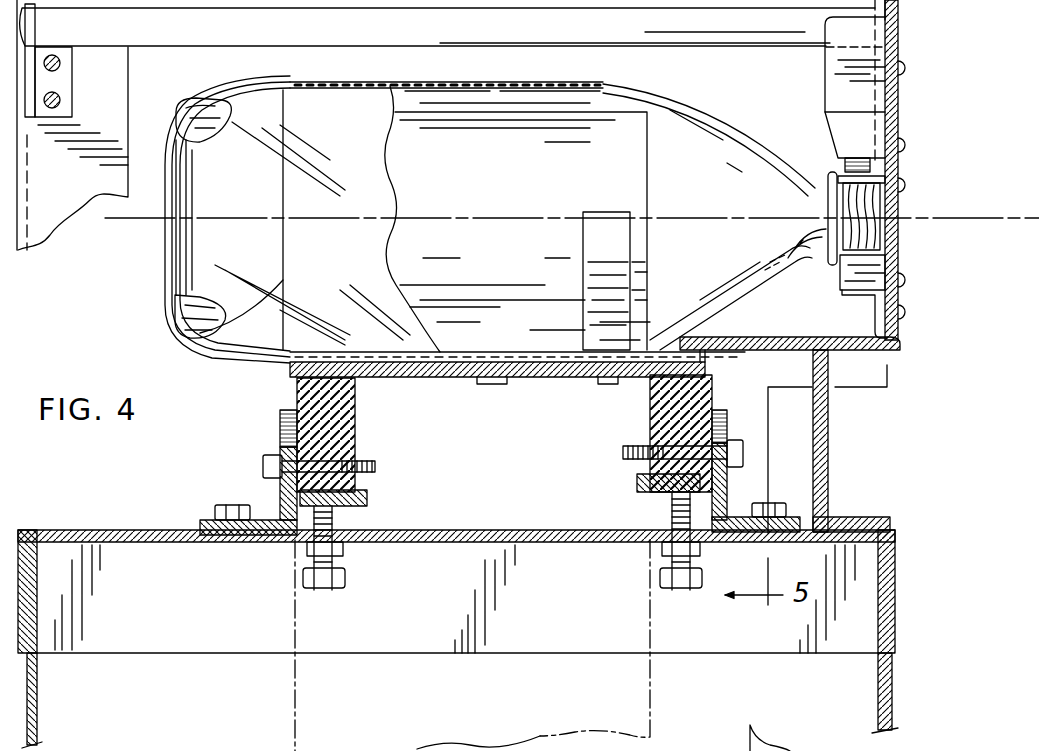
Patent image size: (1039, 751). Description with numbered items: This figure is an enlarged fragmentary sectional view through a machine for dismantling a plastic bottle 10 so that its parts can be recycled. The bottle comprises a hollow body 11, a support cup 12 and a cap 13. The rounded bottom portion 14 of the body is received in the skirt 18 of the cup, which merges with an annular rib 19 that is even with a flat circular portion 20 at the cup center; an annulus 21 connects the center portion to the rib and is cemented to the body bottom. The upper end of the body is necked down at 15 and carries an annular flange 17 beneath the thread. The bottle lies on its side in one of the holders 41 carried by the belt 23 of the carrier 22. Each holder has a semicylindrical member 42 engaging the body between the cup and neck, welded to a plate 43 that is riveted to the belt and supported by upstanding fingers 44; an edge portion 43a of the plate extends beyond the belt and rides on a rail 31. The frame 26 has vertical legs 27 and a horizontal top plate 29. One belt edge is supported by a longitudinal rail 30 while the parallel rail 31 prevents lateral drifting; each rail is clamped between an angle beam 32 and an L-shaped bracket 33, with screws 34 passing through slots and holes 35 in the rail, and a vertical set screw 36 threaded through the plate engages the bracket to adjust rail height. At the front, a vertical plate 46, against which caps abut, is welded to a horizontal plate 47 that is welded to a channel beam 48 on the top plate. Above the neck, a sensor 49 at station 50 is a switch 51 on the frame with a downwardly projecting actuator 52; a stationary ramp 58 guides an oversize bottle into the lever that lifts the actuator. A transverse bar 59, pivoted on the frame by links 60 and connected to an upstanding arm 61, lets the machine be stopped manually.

The plastic bottle 10 is at (655, 83).
The hollow body 11 is at (358, 84).
The support cup 12 is at (187, 100).
The cap 13 is at (876, 200).
The bottom portion 14 is at (206, 330).
The necked down portion 15 is at (812, 192).
The annular flange 17 is at (833, 255).
The skirt 18 is at (238, 96).
The annular rib 19 is at (172, 318).
The flat circular portion 20 is at (172, 232).
The annulus 21 is at (188, 283).
The carrier 22 is at (512, 393).
The belt 23 is at (452, 393).
The frame 26 is at (108, 527).
The vertical legs 27 is at (38, 712).
The top plate 29 is at (510, 530).
The longitudinal rail 30 is at (355, 420).
The parallel rail 31 is at (652, 398).
The angle beam 32 is at (285, 508).
The L-shaped bracket 33 is at (365, 492).
The screws 34 is at (264, 466).
The holes 35 is at (283, 430).
The vertical set screw 36 is at (343, 562).
The holders 41 is at (650, 178).
The semicylindrical member 42 is at (509, 261).
The plate 43 is at (537, 365).
The edge portion 43a is at (702, 362).
The fingers 44 is at (632, 258).
The vertical plate 46 is at (887, 258).
The horizontal plate 47 is at (778, 334).
The channel beam 48 is at (830, 452).
The sensor 49 is at (838, 133).
The station 50 is at (784, 83).
The switch 51 is at (862, 92).
The actuator 52 is at (862, 158).
The stationary ramp 58 is at (860, 292).
The transverse bar 59 is at (558, 44).
The links 60 is at (30, 47).
The arm 61 is at (889, 17).